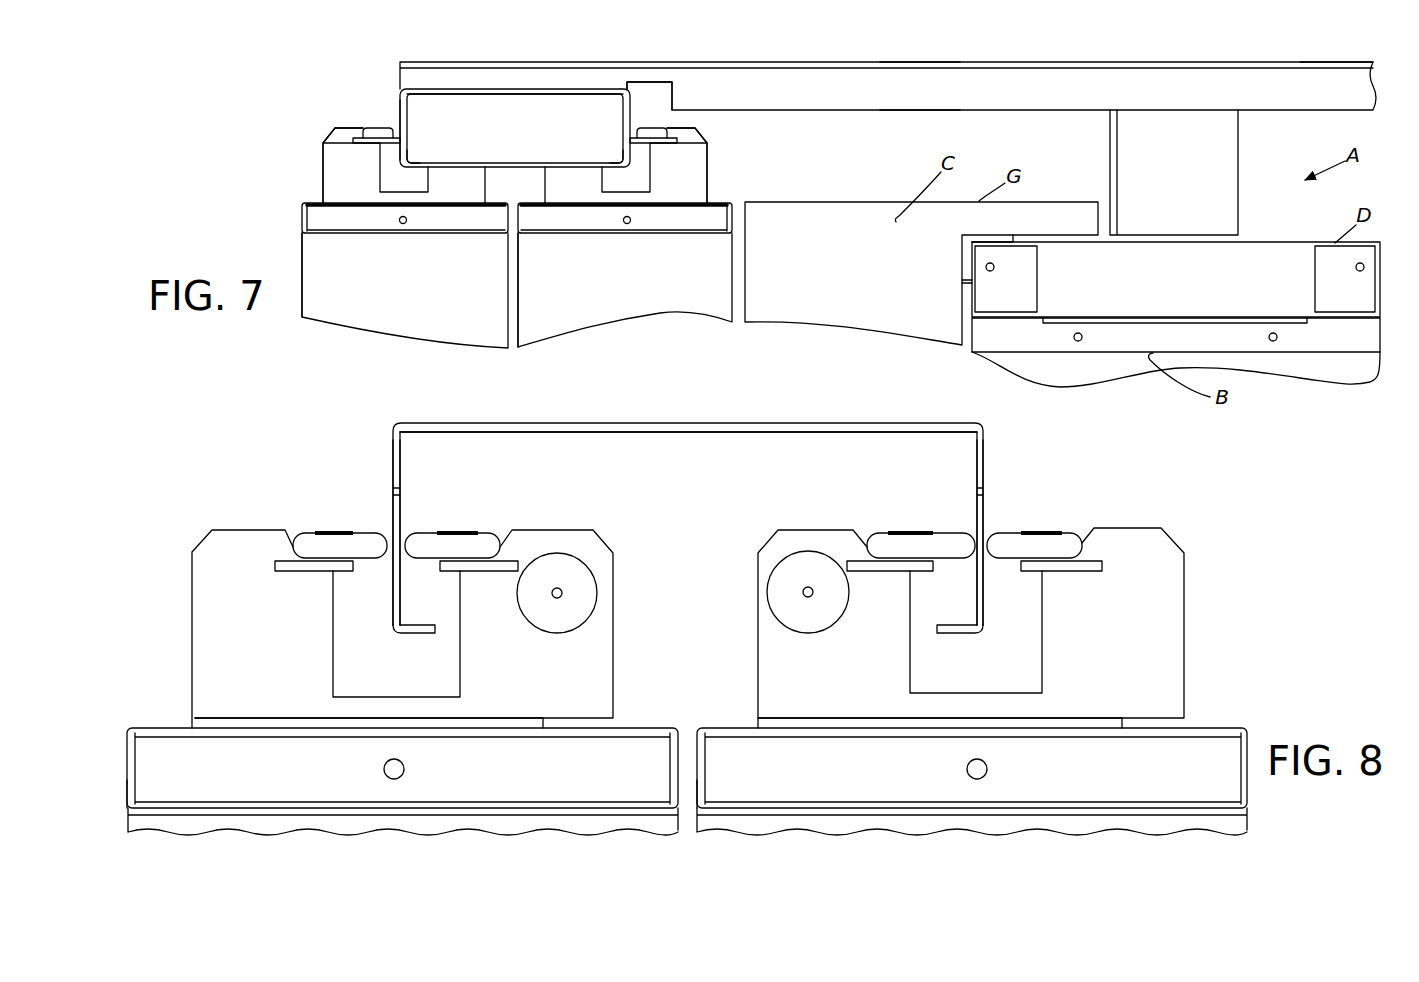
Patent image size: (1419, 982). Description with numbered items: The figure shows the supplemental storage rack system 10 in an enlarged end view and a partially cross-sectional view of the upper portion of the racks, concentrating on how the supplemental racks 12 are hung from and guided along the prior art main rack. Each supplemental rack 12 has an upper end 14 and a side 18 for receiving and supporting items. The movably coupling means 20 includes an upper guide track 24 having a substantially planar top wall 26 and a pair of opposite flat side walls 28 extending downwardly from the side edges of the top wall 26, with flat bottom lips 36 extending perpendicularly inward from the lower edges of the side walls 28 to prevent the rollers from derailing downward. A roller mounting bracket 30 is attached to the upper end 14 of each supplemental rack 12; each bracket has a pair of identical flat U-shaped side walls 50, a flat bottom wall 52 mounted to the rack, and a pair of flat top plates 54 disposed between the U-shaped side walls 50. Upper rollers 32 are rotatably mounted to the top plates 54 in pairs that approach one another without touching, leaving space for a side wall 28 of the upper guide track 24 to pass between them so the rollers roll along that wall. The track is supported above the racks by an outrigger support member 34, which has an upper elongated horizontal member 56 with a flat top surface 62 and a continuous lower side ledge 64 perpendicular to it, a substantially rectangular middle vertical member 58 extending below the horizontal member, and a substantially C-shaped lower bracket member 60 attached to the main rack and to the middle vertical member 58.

In FIG. 7, the supplemental storage rack system 10 is at (1102, 47).
In FIG. 8, the supplemental storage rack system 10 is at (1224, 517).
In FIG. 7, the supplemental rack 12 is at (306, 318).
In FIG. 8, the supplemental rack 12 is at (630, 821).
In FIG. 7, the upper end 14 is at (311, 214).
In FIG. 8, the upper end 14 is at (649, 741).
In FIG. 7, the side 18 is at (303, 272).
In FIG. 8, the side 18 is at (130, 809).
In FIG. 7, the movably coupling means 20 is at (739, 49).
In FIG. 8, the movably coupling means 20 is at (1014, 436).
In FIG. 7, the upper guide track 24 is at (415, 100).
In FIG. 8, the upper guide track 24 is at (519, 420).
In FIG. 7, the top wall 26 is at (548, 88).
In FIG. 8, the top wall 26 is at (724, 423).
In FIG. 7, the side wall 28 is at (400, 112).
In FIG. 8, the side wall 28 is at (391, 462).
In FIG. 7, the roller mounting bracket 30 is at (320, 141).
In FIG. 8, the roller mounting bracket 30 is at (602, 636).
In FIG. 7, the upper roller 32 is at (395, 134).
In FIG. 8, the upper roller 32 is at (375, 541).
In FIG. 7, the outrigger support member 34 is at (992, 57).
In FIG. 7, the bottom lip 36 is at (414, 164).
In FIG. 8, the bottom lip 36 is at (417, 637).
In FIG. 7, the flat U-shaped side wall 50 is at (455, 187).
In FIG. 8, the flat U-shaped side wall 50 is at (203, 627).
In FIG. 7, the flat bottom wall 52 is at (357, 201).
In FIG. 8, the flat bottom wall 52 is at (504, 717).
In FIG. 7, the flat top plate 54 is at (354, 136).
In FIG. 8, the flat top plate 54 is at (305, 572).
In FIG. 7, the upper elongated horizontal member 56 is at (1249, 62).
In FIG. 7, the middle vertical member 58 is at (1224, 158).
In FIG. 7, the lower bracket member 60 is at (1257, 242).
In FIG. 7, the flat top surface 62 is at (895, 62).
In FIG. 7, the continuous lower side ledge 64 is at (903, 98).